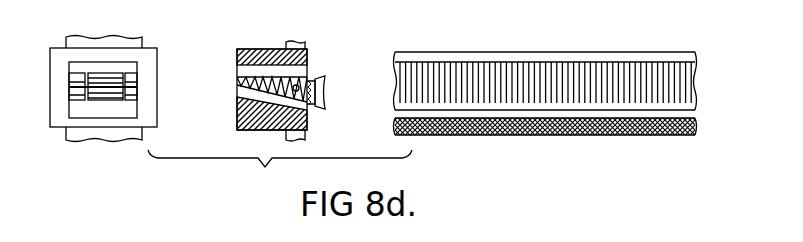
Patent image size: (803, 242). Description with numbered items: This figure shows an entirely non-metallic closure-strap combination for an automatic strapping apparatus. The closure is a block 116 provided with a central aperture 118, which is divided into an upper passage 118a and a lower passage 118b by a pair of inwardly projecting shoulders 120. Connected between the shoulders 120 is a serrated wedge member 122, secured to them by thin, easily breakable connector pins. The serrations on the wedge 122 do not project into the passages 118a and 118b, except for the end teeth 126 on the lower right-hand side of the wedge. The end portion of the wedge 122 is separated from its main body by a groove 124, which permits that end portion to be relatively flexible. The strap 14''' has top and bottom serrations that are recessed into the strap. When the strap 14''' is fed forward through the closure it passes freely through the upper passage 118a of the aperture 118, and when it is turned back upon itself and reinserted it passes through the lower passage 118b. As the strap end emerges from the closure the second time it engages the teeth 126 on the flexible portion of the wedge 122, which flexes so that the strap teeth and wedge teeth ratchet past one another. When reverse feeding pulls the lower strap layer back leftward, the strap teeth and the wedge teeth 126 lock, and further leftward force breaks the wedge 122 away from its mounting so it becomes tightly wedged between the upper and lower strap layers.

The block 116 is at (53, 48).
The central aperture 118 is at (95, 67).
The upper passage 118a is at (260, 72).
The lower passage 118b is at (252, 97).
The inwardly projecting shoulders 120 is at (77, 88).
The serrated wedge member 122 is at (98, 100).
The groove 124 is at (310, 80).
The end teeth 126 is at (308, 107).
The strap 14''' is at (567, 99).